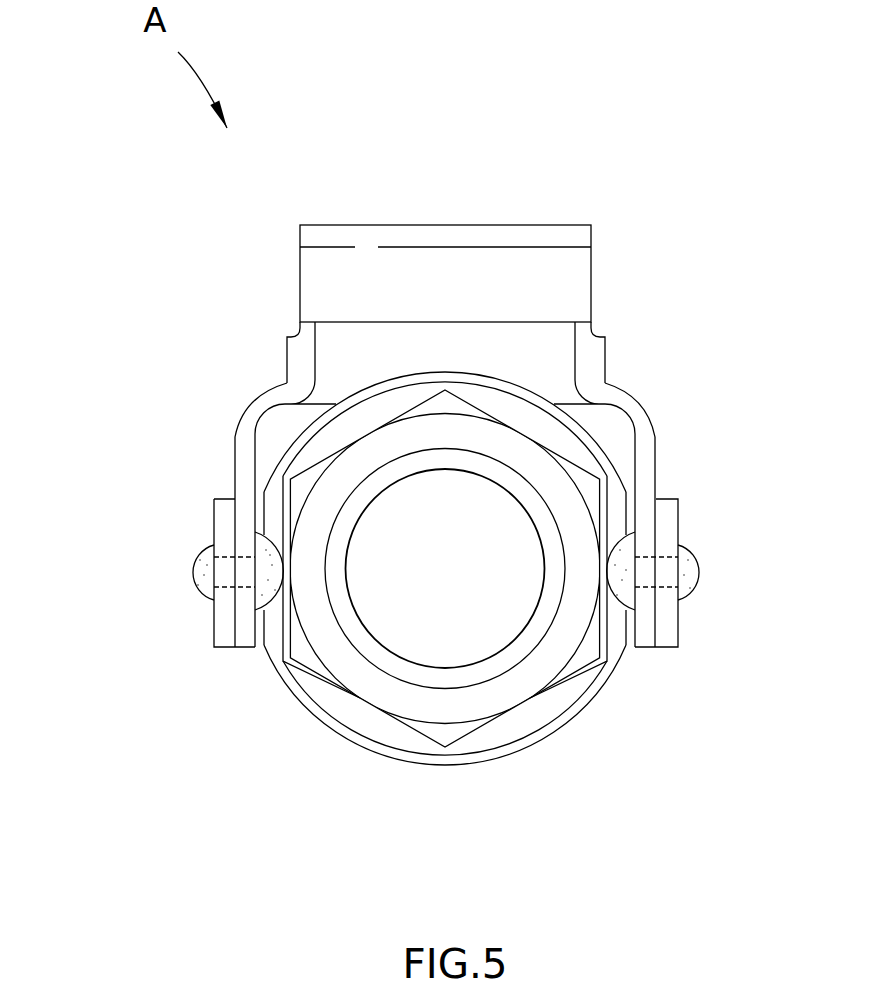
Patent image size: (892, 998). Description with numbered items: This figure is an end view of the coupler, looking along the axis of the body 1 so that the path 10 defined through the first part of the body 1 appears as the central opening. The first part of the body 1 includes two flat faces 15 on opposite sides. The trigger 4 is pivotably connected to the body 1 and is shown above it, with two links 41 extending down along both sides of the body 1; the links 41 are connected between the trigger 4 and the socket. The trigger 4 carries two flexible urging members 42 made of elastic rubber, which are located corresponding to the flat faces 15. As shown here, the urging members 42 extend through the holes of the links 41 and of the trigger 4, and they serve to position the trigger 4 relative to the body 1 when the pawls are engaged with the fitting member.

The body 1 is at (550, 725).
The path 10 is at (432, 580).
The flat faces 15 is at (265, 642).
The trigger 4 is at (594, 277).
The links 41 is at (223, 495).
The flexible urging members 42 is at (198, 555).